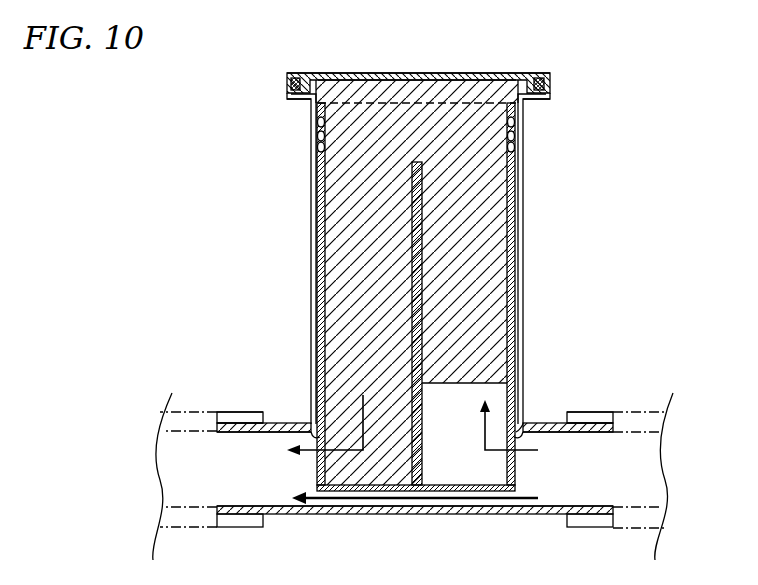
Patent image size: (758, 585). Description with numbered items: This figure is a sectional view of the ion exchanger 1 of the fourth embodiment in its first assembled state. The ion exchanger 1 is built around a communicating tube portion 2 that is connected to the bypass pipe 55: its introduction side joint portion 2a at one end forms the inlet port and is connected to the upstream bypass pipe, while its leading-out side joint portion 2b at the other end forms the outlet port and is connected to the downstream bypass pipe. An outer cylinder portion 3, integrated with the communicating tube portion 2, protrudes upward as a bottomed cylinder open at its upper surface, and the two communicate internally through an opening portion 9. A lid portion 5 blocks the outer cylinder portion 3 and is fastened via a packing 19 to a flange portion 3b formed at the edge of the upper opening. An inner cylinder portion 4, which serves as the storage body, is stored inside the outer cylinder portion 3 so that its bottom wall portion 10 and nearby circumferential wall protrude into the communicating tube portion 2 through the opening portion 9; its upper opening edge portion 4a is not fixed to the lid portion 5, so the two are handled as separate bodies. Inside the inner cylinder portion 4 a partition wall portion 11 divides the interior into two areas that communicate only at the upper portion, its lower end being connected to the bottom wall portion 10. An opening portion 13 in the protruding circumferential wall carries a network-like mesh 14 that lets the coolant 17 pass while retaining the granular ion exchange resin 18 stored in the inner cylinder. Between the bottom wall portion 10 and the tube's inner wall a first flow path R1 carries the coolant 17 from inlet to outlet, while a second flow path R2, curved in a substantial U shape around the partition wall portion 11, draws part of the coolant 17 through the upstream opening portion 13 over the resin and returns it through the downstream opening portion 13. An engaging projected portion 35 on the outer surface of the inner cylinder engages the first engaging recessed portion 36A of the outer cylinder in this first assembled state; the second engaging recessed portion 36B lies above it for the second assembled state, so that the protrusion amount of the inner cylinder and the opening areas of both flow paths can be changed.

The ion exchanger 1 is at (612, 67).
The communicating tube portion 2 is at (534, 514).
The introduction side joint portion 2a is at (588, 527).
The leading-out side joint portion 2b is at (238, 527).
The outer cylinder portion 3 is at (524, 280).
The flange portion 3b is at (300, 100).
The inner cylinder portion 4 is at (524, 205).
The upper opening edge portion 4a is at (380, 73).
The lid portion 5 is at (474, 73).
The opening portion 9 is at (511, 437).
The bottom wall portion 10 is at (398, 484).
The partition wall portion 11 is at (421, 246).
The opening portion 13 is at (312, 424).
The mesh 14 is at (324, 458).
The coolant 17 is at (258, 470).
The ion exchange resin 18 is at (360, 216).
The packing 19 is at (287, 82).
The engaging projected portion 35 is at (316, 139).
The first engaging recessed portion 36A is at (313, 156).
The second engaging recessed portion 36B is at (316, 124).
The bypass pipe 55 is at (220, 411).
The first flow path R1 is at (428, 506).
The second flow path R2 is at (505, 357).